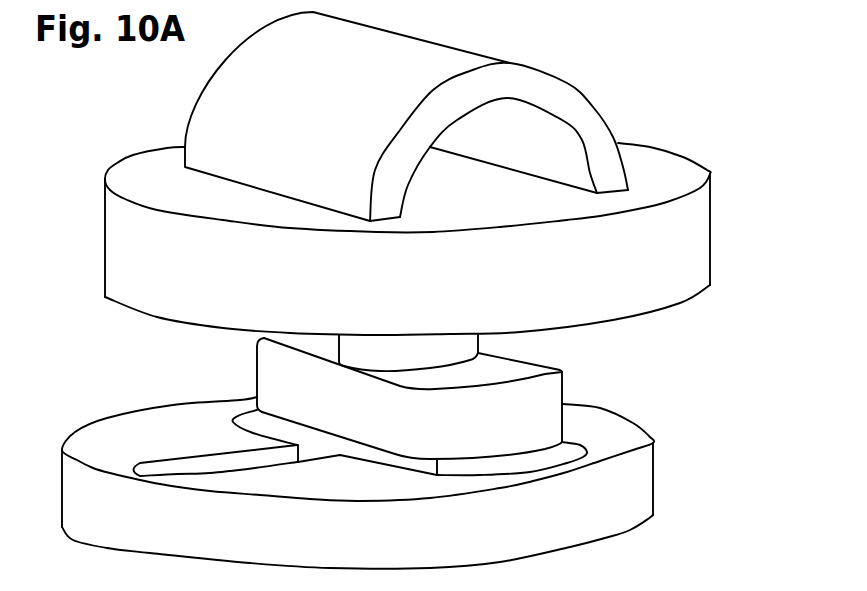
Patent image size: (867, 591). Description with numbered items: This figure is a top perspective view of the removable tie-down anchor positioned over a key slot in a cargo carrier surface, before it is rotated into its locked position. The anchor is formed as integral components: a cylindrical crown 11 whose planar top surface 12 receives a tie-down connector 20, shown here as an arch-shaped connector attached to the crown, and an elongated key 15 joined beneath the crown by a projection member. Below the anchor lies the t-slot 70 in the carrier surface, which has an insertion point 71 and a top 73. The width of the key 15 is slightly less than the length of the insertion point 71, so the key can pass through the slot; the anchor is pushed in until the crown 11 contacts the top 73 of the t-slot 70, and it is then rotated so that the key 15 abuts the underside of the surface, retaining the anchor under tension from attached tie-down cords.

The crown 11 is at (434, 239).
The top surface 12 is at (503, 209).
The tie-down connector 20 is at (465, 50).
The key 15 is at (558, 388).
The t-slot 70 is at (383, 471).
The insertion point 71 is at (233, 418).
The top of the t-slot 73 is at (345, 495).